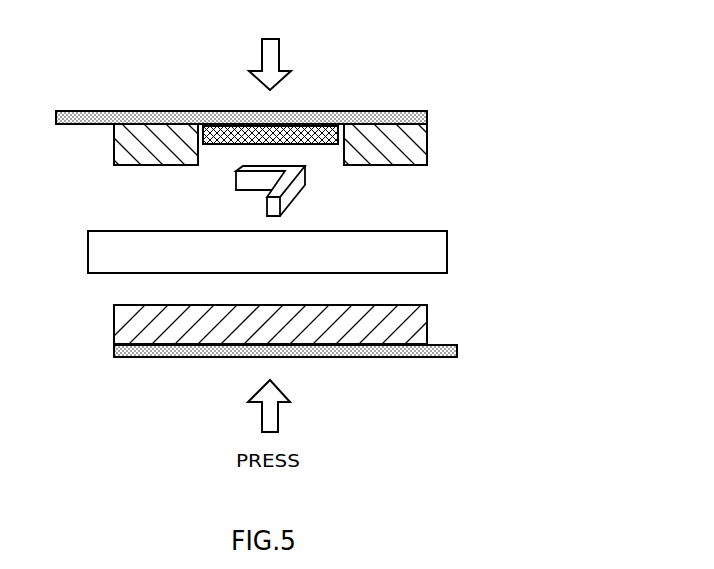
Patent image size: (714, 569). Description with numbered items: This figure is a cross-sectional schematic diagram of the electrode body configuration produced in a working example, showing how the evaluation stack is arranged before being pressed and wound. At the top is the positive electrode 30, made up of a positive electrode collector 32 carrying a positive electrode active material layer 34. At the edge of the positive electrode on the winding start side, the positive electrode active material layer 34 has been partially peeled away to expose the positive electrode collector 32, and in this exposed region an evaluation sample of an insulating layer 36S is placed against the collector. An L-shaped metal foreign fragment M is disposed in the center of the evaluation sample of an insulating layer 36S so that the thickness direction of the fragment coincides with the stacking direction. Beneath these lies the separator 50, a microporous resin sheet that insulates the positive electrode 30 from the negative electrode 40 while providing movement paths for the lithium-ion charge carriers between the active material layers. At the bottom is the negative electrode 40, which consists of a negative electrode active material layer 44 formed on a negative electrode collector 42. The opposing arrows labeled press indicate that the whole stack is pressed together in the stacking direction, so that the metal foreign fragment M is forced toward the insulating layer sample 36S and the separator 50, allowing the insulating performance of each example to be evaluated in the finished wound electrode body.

The positive electrode 30 is at (308, 156).
The positive electrode collector 32 is at (427, 118).
The positive electrode active material layer 34 is at (427, 150).
The evaluation sample of an insulating layer 36S is at (322, 145).
The metal foreign fragment M is at (310, 190).
The separator 50 is at (447, 258).
The negative electrode 40 is at (345, 332).
The negative electrode active material layer 44 is at (427, 315).
The negative electrode collector 42 is at (457, 350).